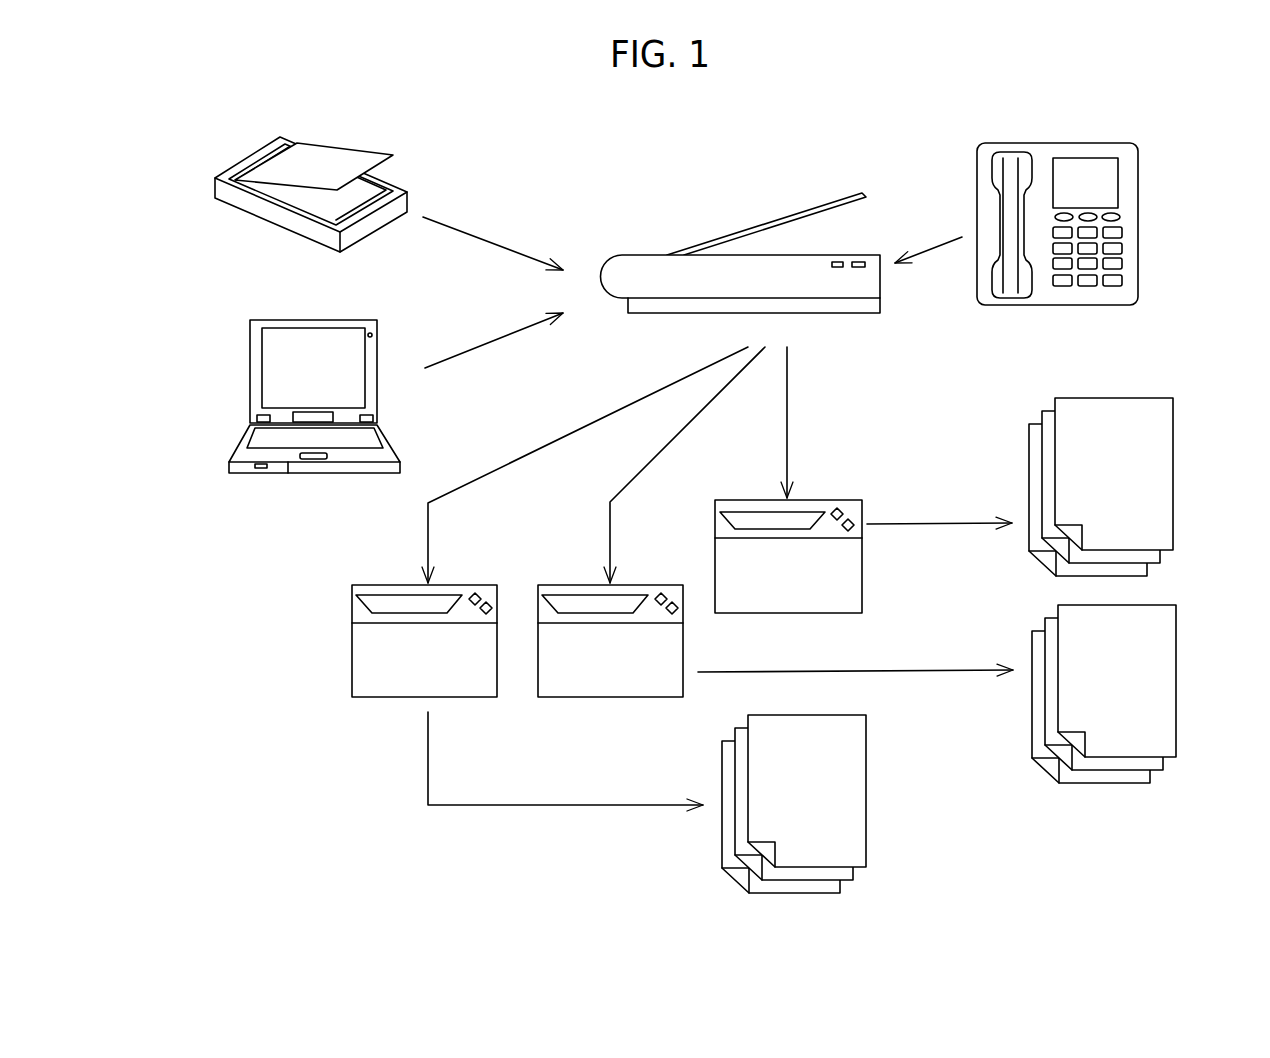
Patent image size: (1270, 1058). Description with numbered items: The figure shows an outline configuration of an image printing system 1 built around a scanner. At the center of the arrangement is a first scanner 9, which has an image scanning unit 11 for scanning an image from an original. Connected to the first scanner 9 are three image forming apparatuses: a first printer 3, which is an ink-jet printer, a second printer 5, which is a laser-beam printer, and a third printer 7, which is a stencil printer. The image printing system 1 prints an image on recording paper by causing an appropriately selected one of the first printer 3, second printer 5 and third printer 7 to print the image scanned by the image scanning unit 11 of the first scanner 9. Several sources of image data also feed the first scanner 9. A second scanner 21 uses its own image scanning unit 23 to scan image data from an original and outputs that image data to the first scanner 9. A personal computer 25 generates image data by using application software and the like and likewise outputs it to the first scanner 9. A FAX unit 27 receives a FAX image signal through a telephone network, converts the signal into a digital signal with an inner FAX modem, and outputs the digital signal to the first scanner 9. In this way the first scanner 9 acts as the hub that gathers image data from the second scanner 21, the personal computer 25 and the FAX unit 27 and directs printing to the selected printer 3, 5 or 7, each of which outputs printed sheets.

The image printing system 1 is at (792, 150).
The first printer 3 is at (768, 613).
The second printer 5 is at (595, 697).
The third printer 7 is at (473, 697).
The first scanner 9 is at (880, 283).
The image scanning unit 11 is at (847, 248).
The second scanner 21 is at (243, 200).
The image scanning unit 23 is at (370, 190).
The personal computer 25 is at (253, 378).
The FAX unit 27 is at (1140, 217).